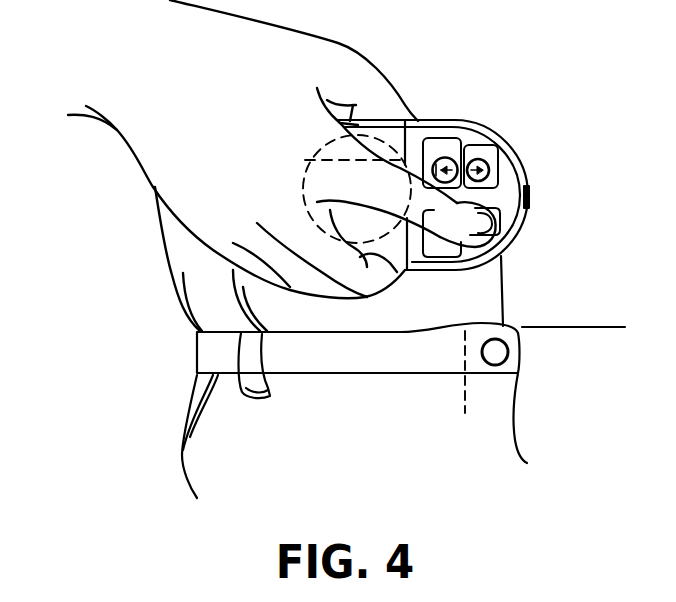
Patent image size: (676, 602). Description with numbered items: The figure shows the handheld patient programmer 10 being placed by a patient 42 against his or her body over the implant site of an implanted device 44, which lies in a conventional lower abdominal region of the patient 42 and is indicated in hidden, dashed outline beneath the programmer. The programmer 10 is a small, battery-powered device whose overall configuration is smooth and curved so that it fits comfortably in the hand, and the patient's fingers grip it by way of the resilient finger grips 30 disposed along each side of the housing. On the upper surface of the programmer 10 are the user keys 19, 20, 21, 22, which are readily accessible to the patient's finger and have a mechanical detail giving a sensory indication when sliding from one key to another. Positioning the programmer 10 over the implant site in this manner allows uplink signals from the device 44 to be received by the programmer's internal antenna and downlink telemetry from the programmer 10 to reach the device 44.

The patient programmer 10 is at (410, 141).
The user key 19 is at (497, 172).
The user key 20 is at (442, 157).
The user key 21 is at (483, 213).
The user key 22 is at (445, 247).
The resilient finger grips 30 is at (412, 151).
The patient 42 is at (170, 250).
The device 44 is at (298, 168).